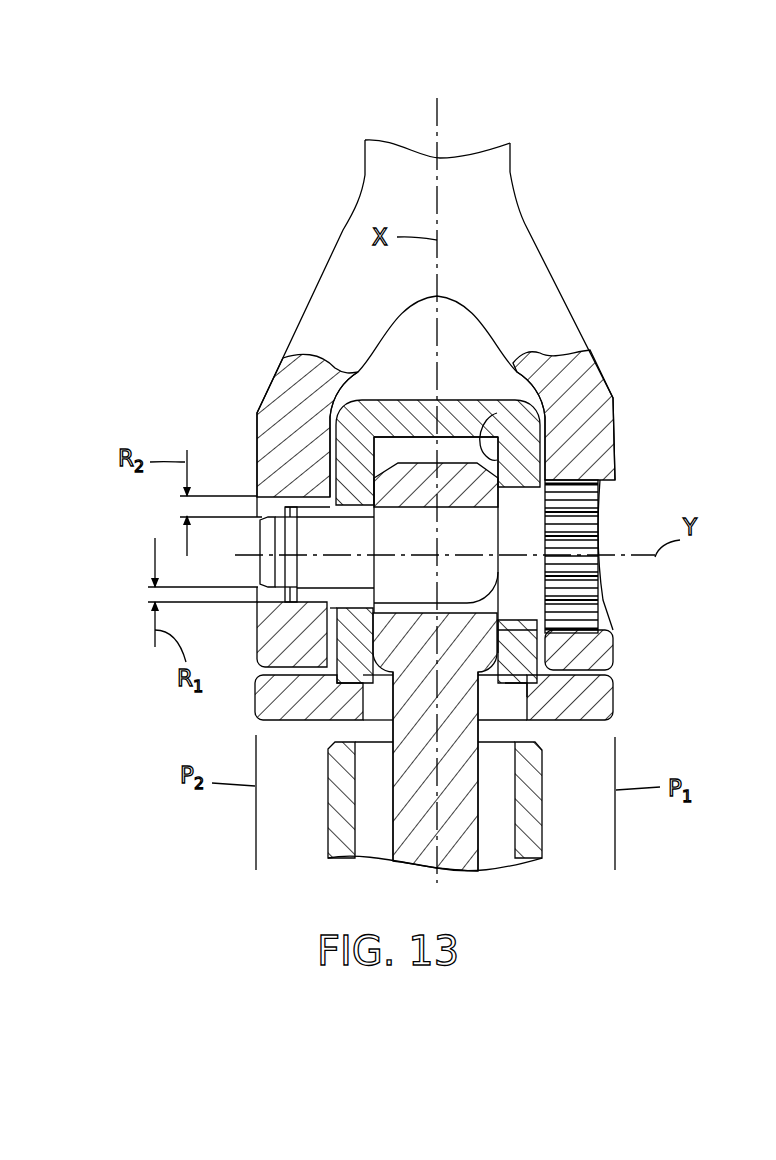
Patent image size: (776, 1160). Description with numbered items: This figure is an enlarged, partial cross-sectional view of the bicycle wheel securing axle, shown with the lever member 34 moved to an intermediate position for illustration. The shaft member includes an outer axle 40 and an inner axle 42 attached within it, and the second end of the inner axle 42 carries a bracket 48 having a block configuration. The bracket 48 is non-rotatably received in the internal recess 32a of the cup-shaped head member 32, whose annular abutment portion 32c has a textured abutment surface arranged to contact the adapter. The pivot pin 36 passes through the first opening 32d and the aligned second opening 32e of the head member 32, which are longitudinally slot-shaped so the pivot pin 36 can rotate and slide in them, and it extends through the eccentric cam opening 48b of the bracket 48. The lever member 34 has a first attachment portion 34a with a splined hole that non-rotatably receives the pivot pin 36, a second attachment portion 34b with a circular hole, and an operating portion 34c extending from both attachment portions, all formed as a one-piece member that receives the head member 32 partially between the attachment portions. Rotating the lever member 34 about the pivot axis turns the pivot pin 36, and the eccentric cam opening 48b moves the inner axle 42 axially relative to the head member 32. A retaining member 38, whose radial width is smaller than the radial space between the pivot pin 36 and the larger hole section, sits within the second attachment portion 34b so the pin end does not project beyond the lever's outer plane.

The head member 32 is at (480, 382).
The internal recess 32a is at (545, 396).
The annular abutment portion 32c is at (615, 695).
The first opening 32d is at (523, 487).
The second opening 32e is at (352, 507).
The lever member 34 is at (548, 176).
The first attachment portion 34a is at (590, 444).
The second attachment portion 34b is at (282, 434).
The operating portion 34c is at (490, 238).
The pivot pin 36 is at (610, 487).
The retaining member 38 is at (285, 600).
The outer axle 40 is at (545, 838).
The inner axle 42 is at (482, 860).
The bracket 48 is at (410, 462).
The eccentric cam opening 48b is at (560, 587).